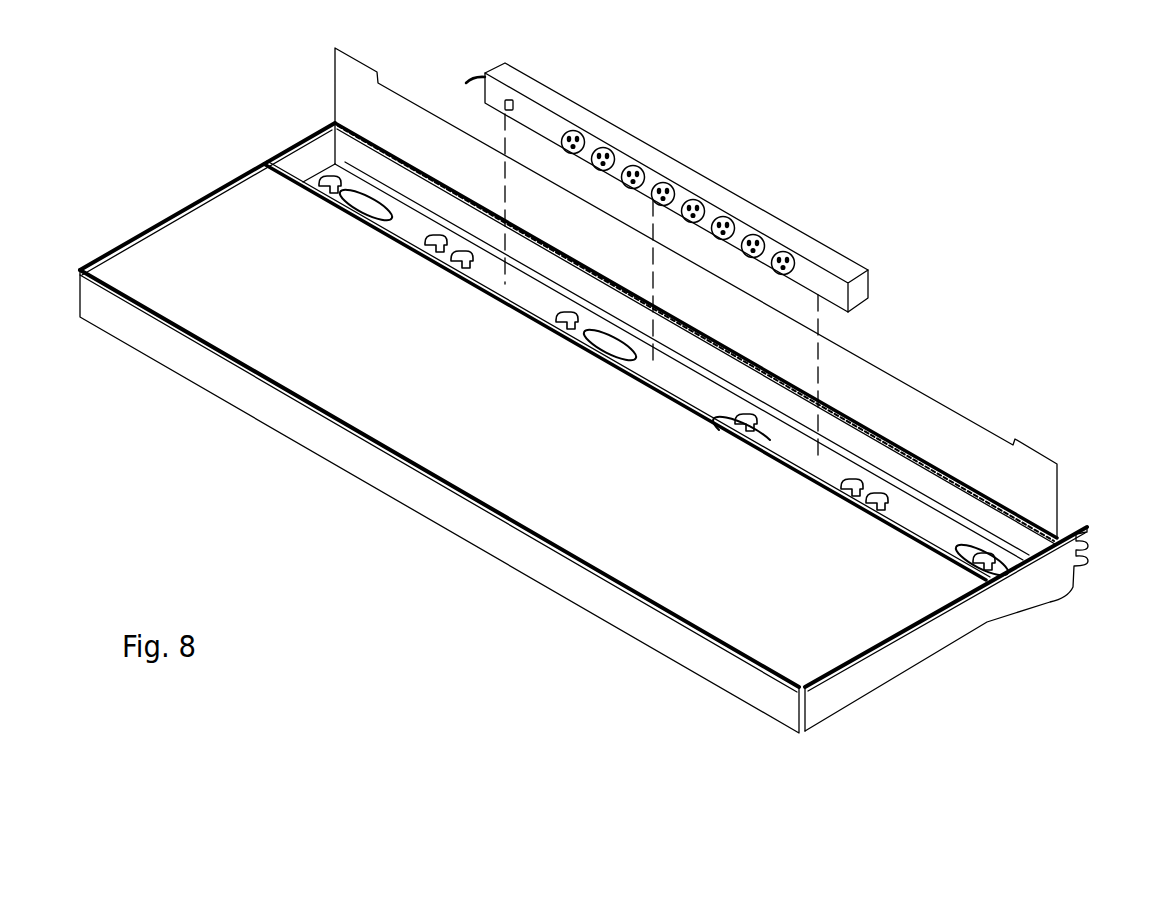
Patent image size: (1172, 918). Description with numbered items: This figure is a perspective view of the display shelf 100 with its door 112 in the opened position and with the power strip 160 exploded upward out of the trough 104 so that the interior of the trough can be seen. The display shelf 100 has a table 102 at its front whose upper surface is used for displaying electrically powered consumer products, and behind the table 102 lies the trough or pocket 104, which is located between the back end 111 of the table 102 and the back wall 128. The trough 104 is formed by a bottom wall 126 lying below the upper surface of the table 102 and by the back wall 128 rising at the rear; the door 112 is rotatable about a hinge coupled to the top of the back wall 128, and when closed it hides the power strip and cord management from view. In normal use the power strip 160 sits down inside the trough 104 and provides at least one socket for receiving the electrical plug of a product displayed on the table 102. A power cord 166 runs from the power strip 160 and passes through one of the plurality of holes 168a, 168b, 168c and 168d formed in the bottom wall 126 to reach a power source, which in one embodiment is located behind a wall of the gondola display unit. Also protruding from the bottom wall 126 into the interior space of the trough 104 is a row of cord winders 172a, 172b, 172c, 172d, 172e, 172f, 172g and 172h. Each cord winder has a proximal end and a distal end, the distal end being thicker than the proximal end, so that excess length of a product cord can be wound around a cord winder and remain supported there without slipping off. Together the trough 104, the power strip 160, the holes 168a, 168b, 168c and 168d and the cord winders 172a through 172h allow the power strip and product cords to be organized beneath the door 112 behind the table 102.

The display shelf 100 is at (963, 330).
The table 102 is at (260, 158).
The trough 104 is at (335, 122).
The back end of table 111 is at (604, 359).
The door 112 is at (1082, 472).
The bottom wall 126 is at (673, 377).
The back wall 128 is at (884, 413).
The power strip 160 is at (745, 200).
The power cord 166 is at (478, 78).
The hole 168a is at (393, 194).
The hole 168b is at (630, 334).
The hole 168c is at (846, 442).
The hole 168d is at (1000, 550).
The cord winder 172a is at (337, 176).
The cord winder 172b is at (446, 236).
The cord winder 172c is at (468, 252).
The cord winder 172d is at (576, 312).
The cord winder 172e is at (752, 413).
The cord winder 172f is at (858, 480).
The cord winder 172g is at (884, 494).
The cord winder 172h is at (990, 556).